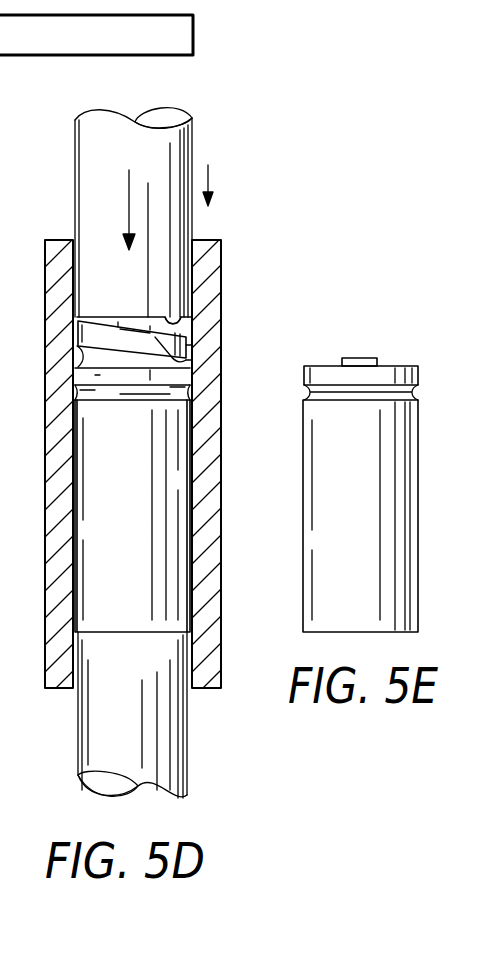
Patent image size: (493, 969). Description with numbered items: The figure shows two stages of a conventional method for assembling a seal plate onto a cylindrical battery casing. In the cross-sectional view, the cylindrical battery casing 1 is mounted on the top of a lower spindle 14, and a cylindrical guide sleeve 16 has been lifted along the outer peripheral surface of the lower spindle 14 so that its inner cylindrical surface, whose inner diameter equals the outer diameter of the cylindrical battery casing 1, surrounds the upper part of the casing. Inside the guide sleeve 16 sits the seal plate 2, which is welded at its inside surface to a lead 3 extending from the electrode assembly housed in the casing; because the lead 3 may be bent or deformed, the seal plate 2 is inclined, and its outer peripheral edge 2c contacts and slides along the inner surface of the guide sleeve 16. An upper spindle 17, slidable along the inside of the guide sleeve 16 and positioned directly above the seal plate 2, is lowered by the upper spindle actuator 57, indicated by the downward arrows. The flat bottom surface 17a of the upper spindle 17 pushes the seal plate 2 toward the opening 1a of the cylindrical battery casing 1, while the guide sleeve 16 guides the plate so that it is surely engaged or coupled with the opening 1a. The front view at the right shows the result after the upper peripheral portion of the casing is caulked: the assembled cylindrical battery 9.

In FIG. 5D, the upper spindle actuator 57 is at (194, 40).
In FIG. 5D, the upper spindle 17 is at (80, 190).
In FIG. 5D, the flat bottom surface 17a is at (166, 318).
In FIG. 5D, the seal plate 2 is at (192, 328).
In FIG. 5D, the lead 3 is at (190, 356).
In FIG. 5D, the outer peripheral edge 2c is at (76, 362).
In FIG. 5D, the opening 1a is at (196, 366).
In FIG. 5D, the cylindrical battery casing 1 is at (178, 516).
In FIG. 5D, the guide sleeve 16 is at (204, 579).
In FIG. 5D, the lower spindle 14 is at (172, 748).
In FIG. 5E, the cylindrical battery 9 is at (406, 492).